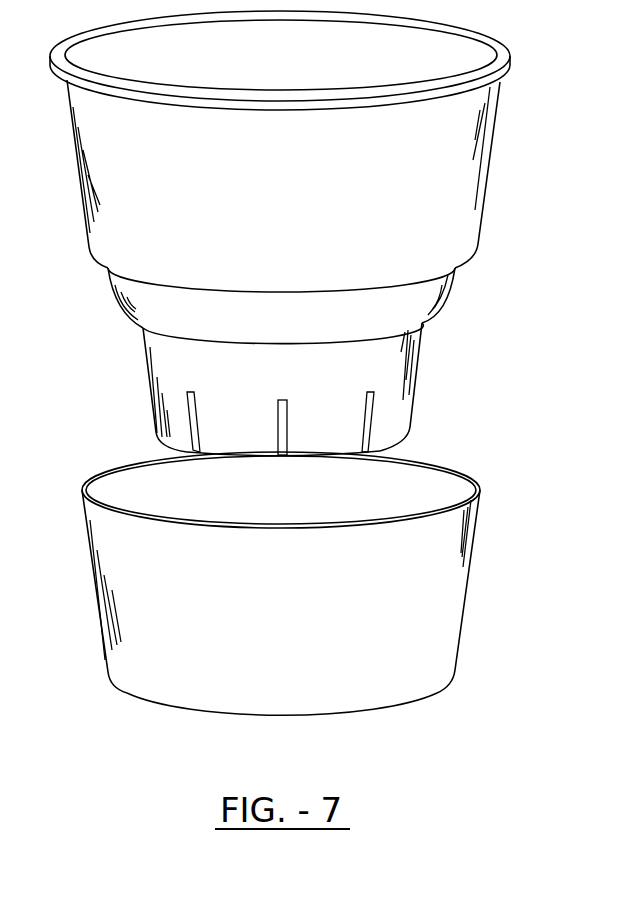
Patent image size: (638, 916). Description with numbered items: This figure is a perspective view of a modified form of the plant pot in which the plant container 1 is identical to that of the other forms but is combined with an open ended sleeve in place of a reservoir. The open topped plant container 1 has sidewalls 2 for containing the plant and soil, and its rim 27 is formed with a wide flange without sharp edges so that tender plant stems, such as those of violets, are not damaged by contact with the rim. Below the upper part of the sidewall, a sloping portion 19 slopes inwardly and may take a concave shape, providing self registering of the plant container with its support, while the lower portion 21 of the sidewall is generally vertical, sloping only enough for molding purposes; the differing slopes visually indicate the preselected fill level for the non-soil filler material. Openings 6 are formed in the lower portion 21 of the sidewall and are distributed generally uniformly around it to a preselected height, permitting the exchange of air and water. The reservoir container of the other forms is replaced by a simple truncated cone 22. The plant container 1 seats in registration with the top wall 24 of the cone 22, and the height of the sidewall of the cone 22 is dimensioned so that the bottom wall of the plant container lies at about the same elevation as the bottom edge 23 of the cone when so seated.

The rim 27 is at (498, 51).
The plant container 1 is at (493, 148).
The sidewalls 2 is at (483, 200).
The sloping portion of the sidewall 19 is at (448, 293).
The lower portion of the sidewall 21 is at (415, 389).
The openings 6 is at (288, 430).
The top wall of the cone 24 is at (440, 460).
The truncated cone 22 is at (470, 573).
The bottom edge of the cone 23 is at (403, 703).